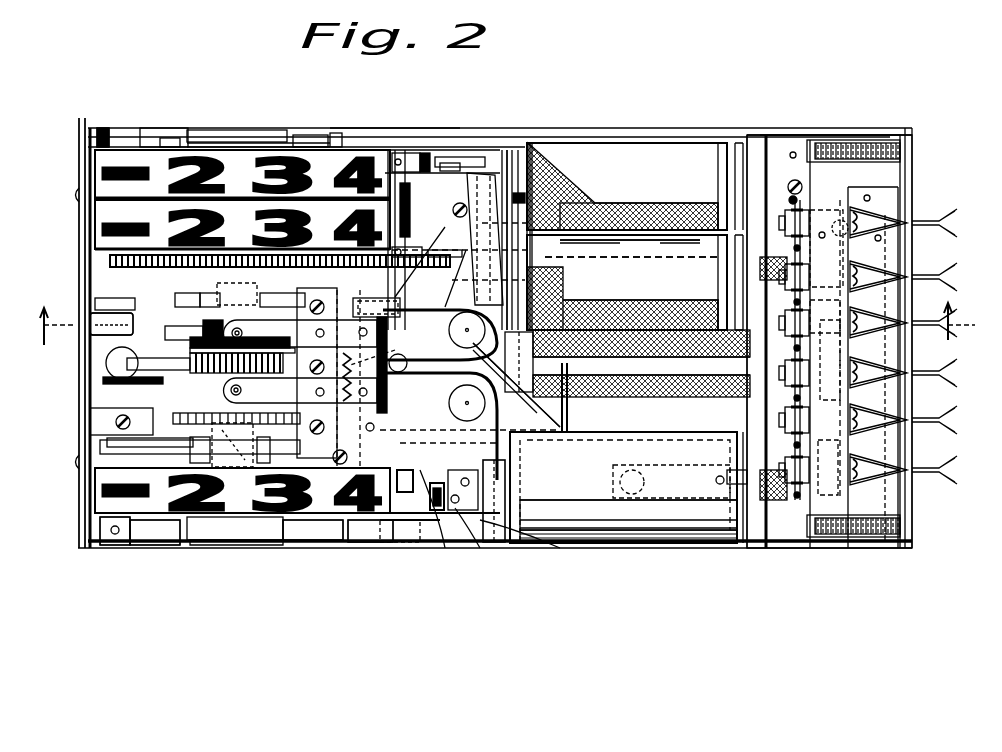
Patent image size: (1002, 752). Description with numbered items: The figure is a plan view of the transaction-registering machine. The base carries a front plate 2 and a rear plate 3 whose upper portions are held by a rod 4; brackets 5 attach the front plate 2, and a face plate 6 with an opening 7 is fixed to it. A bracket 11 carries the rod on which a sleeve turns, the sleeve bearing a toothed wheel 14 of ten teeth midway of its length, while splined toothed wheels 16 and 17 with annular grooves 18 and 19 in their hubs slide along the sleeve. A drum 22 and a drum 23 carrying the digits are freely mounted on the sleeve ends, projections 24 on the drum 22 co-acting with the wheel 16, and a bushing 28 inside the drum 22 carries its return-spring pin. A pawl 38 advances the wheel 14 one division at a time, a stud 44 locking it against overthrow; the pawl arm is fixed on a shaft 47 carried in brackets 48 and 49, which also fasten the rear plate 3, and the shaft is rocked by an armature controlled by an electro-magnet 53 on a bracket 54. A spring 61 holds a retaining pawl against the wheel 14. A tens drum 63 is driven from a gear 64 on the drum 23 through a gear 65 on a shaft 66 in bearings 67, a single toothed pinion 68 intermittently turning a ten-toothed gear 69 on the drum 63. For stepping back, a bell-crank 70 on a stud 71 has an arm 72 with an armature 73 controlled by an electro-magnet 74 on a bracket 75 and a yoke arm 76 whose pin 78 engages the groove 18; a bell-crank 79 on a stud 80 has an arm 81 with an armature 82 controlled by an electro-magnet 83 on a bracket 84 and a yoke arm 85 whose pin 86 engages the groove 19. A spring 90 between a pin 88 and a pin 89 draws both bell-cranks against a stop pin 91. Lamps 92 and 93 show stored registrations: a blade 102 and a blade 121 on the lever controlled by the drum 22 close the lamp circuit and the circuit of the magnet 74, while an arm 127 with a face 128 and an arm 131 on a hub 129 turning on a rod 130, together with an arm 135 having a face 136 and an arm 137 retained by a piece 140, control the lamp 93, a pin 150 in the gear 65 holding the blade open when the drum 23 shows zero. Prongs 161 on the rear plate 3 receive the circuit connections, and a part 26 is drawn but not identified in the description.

The front plate 2 is at (88, 548).
The rear plate 3 is at (900, 435).
The rod 4 is at (107, 323).
The brackets 5 is at (112, 140).
The face plate 6 is at (78, 548).
The opening 7 is at (492, 324).
The bracket 11 is at (215, 137).
The toothed wheel 14 is at (210, 378).
The toothed wheel 16 is at (150, 470).
The toothed wheel 17 is at (195, 296).
The annular groove 18 is at (190, 410).
The annular groove 19 is at (125, 321).
The drum 22 is at (155, 545).
The drum 23 is at (112, 215).
The projection 24 is at (290, 545).
The pawl 26 is at (237, 286).
The bushing 28 is at (245, 545).
The pawl 38 is at (106, 362).
The stud 44 is at (186, 362).
The shaft 47 is at (843, 230).
The bracket 48 is at (885, 488).
The bracket 49 is at (905, 245).
The electro-magnet 53 is at (830, 300).
The bracket 54 is at (565, 437).
The spring 61 is at (213, 440).
The drum 63 is at (272, 157).
The gear 64 is at (110, 262).
The gear 65 is at (335, 288).
The shaft 66 is at (362, 128).
The bearings 67 is at (450, 160).
The single toothed pinion 68 is at (398, 152).
The gear 69 is at (178, 145).
The bell-crank 70 is at (505, 440).
The stud 71 is at (548, 548).
The arm 72 is at (473, 545).
The armature 73 is at (503, 560).
The electro-magnet 74 is at (668, 543).
The bracket 75 is at (745, 535).
The arm 76 is at (405, 520).
The pin 78 is at (243, 391).
The bell-crank 79 is at (553, 397).
The stud 80 is at (560, 330).
The arm 81 is at (465, 237).
The armature 82 is at (545, 165).
The electro-magnet 83 is at (600, 145).
The bracket 84 is at (755, 145).
The arm 85 is at (143, 300).
The pin 86 is at (168, 338).
The pin 88 is at (352, 520).
The pin 89 is at (438, 335).
The spring 90 is at (245, 333).
The pin 91 is at (410, 368).
The lamp 92 is at (74, 462).
The lamp 93 is at (72, 196).
The blade 102 is at (427, 520).
The blade 121 is at (443, 520).
The arm 127 is at (462, 328).
The face 128 is at (395, 290).
The hub 129 is at (575, 280).
The rod 130 is at (552, 248).
The arm 131 is at (565, 262).
The arm 135 is at (425, 150).
The face 136 is at (308, 140).
The arm 137 is at (512, 150).
The piece 140 is at (510, 150).
The pin 150 is at (379, 305).
The prongs 161 is at (955, 222).